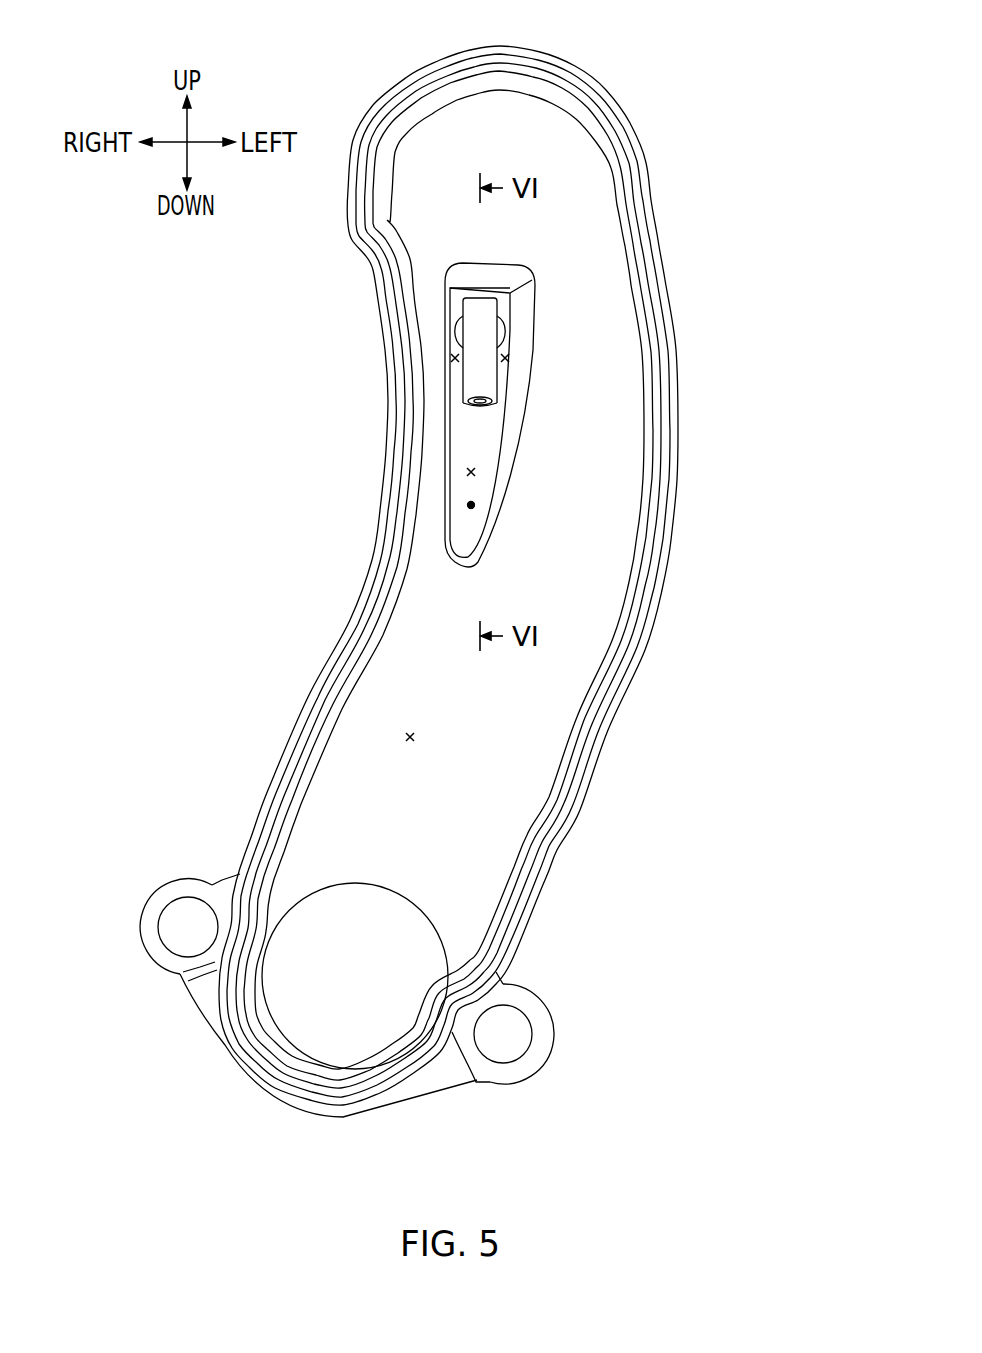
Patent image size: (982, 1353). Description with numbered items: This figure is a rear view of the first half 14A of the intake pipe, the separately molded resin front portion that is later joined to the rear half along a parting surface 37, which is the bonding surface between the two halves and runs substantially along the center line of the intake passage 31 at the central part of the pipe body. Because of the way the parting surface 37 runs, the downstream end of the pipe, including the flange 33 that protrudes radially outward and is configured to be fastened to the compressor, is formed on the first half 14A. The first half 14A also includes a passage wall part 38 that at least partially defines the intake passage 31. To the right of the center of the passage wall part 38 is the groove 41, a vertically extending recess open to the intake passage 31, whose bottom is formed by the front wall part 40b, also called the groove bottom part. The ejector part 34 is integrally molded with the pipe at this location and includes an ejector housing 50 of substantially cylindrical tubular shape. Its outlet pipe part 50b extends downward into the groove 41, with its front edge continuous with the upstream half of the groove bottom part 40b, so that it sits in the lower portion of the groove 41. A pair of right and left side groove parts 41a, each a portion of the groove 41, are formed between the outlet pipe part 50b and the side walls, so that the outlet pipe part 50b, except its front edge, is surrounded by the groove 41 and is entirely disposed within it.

The first half 14A is at (621, 93).
The intake passage 31 is at (406, 737).
The flange 33 is at (432, 1087).
The ejector part 34 is at (446, 321).
The parting surface 37 is at (600, 730).
The passage wall part 38 is at (600, 565).
The front wall part 40b is at (468, 505).
The groove 41 is at (467, 472).
The side groove parts 41a is at (451, 358).
The ejector housing 50 is at (497, 314).
The outlet pipe part 50b is at (475, 378).